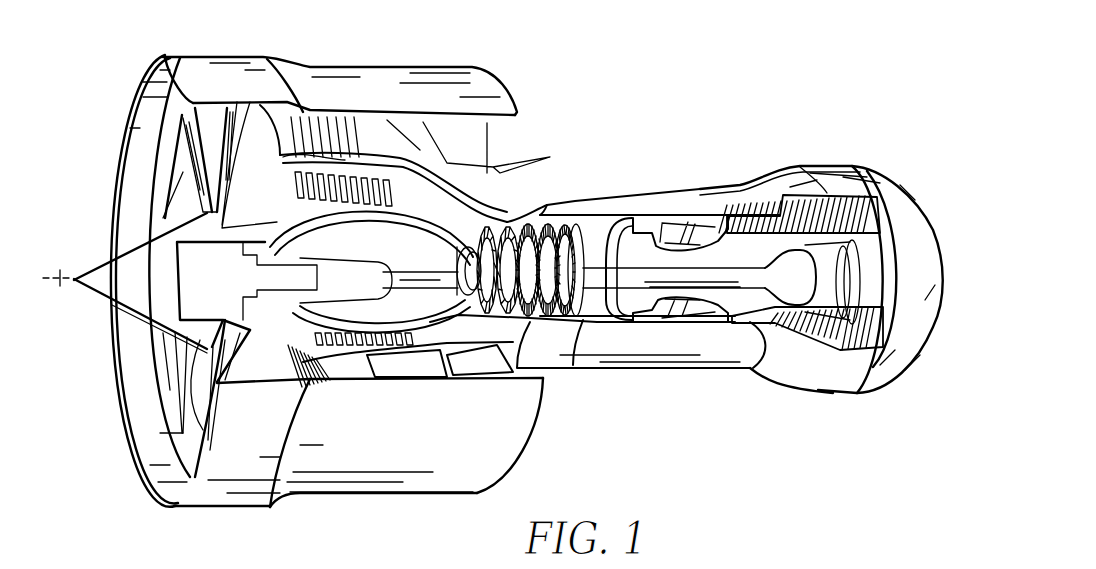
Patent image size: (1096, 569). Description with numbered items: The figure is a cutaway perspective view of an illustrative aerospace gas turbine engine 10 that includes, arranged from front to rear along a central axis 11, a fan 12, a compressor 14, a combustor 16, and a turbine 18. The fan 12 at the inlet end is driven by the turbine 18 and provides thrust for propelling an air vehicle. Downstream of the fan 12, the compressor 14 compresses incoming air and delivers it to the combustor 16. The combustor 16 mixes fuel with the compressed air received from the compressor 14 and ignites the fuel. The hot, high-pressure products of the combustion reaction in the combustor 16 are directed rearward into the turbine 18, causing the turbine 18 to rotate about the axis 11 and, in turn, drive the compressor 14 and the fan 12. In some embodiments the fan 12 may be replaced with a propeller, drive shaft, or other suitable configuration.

The gas turbine engine 10 is at (877, 76).
The axis 11 is at (60, 278).
The fan 12 is at (177, 163).
The compressor 14 is at (513, 219).
The combustor 16 is at (685, 216).
The turbine 18 is at (765, 170).